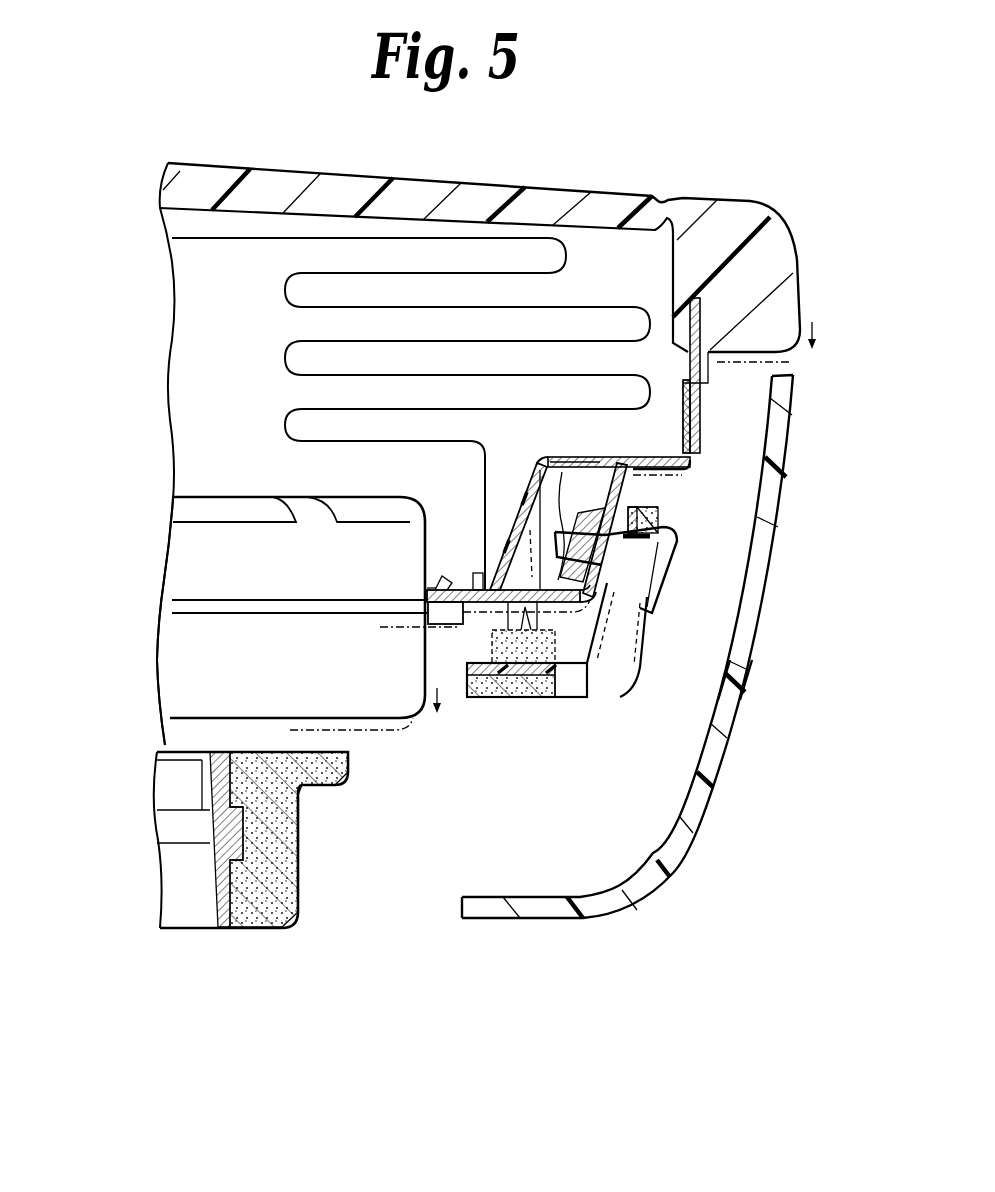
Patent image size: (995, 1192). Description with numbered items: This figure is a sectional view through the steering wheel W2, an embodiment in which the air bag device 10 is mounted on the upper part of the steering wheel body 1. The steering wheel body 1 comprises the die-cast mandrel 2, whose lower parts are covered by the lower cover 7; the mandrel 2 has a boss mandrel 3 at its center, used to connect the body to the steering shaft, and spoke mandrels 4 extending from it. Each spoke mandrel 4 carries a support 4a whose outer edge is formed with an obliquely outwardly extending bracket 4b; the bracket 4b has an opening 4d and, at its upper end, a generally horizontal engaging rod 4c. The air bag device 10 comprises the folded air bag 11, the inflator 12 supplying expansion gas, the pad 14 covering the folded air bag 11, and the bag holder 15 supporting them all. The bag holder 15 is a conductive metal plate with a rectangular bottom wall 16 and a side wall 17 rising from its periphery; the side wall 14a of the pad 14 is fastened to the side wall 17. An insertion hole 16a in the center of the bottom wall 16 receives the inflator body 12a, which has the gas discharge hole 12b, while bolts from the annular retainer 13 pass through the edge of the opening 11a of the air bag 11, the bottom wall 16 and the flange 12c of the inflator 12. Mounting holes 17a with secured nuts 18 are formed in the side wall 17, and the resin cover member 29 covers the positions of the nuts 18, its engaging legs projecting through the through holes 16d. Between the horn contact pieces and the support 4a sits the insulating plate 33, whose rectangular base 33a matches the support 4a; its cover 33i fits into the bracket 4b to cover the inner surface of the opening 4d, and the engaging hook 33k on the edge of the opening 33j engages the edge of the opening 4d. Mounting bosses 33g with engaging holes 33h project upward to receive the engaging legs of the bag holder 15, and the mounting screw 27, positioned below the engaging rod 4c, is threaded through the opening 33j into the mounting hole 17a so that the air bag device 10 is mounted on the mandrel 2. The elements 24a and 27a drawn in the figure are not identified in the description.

The steering wheel W2 is at (724, 136).
The air bag device 10 is at (95, 178).
The pad 14 is at (180, 188).
The side wall of the pad 14a is at (700, 422).
The air bag 11 is at (197, 240).
The opening of the air bag 11a is at (437, 588).
The inflator 12 is at (150, 638).
The inflator body 12a is at (185, 680).
The gas discharge hole 12b is at (212, 508).
The flange of the inflator 12c is at (187, 605).
The annular retainer 13 is at (478, 576).
The bag holder 15 is at (445, 613).
The bottom wall 16 is at (460, 604).
The insertion hole 16a is at (428, 591).
The through holes 16d is at (530, 530).
The side wall 17 is at (607, 460).
The mounting hole 17a is at (563, 460).
The nut 18 is at (590, 512).
The positioning boss 24a is at (497, 700).
The mounting screw 27 is at (657, 592).
The clip flange 27a is at (652, 574).
The cover member 29 is at (525, 466).
The insulating plate 33 is at (483, 700).
The base 33a is at (511, 669).
The mounting boss 33g is at (580, 698).
The engaging hole 33h is at (545, 700).
The cover 33i is at (643, 502).
The opening 33j is at (610, 628).
The engaging hook 33k is at (662, 530).
The spoke mandrel 4 is at (633, 696).
The support 4a is at (520, 700).
The bracket 4b is at (610, 672).
The engaging rod 4c is at (660, 510).
The opening 4d is at (735, 680).
The lower cover 7 is at (652, 887).
The mandrel 2 is at (300, 936).
The steering wheel body 1 is at (251, 840).
The boss mandrel 3 is at (243, 917).